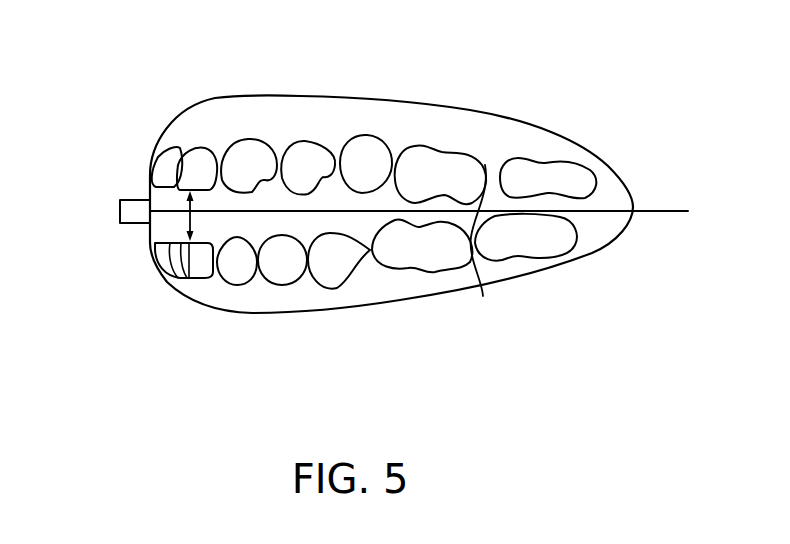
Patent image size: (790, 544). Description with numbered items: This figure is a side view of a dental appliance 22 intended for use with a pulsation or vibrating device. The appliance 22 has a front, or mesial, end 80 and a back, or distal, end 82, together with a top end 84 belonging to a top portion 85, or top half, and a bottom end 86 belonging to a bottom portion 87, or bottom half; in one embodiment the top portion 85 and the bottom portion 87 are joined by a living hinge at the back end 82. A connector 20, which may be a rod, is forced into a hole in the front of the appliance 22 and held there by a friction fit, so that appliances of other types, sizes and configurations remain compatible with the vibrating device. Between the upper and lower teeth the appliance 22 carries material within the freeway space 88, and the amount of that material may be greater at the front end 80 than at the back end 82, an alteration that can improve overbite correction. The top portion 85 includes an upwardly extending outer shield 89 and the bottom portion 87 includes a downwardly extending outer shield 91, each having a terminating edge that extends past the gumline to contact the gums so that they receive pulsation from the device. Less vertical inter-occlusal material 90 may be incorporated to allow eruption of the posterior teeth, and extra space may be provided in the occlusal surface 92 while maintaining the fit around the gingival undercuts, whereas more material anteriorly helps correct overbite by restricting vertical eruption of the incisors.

The connector 20 is at (118, 210).
The dental appliance 22 is at (128, 75).
The front end 80 is at (148, 175).
The back end 82 is at (623, 172).
The top end 84 is at (363, 97).
The top portion 85 is at (470, 132).
The bottom end 86 is at (352, 308).
The bottom portion 87 is at (273, 312).
The freeway space 88 is at (193, 217).
The outer shield 89 is at (225, 118).
The vertical inter-occlusal material 90 is at (668, 213).
The outer shield 91 is at (226, 296).
The occlusal surface 92 is at (480, 243).